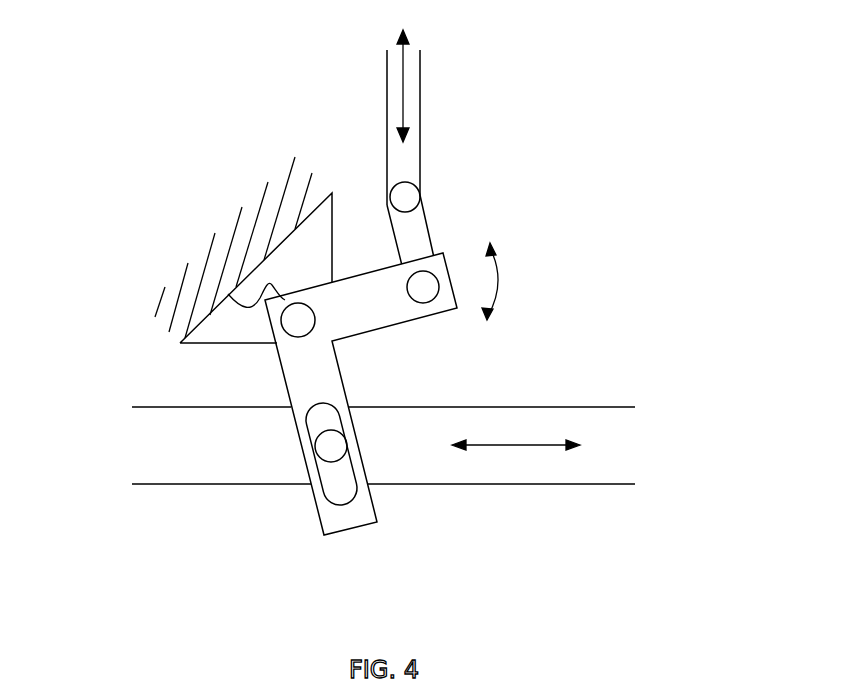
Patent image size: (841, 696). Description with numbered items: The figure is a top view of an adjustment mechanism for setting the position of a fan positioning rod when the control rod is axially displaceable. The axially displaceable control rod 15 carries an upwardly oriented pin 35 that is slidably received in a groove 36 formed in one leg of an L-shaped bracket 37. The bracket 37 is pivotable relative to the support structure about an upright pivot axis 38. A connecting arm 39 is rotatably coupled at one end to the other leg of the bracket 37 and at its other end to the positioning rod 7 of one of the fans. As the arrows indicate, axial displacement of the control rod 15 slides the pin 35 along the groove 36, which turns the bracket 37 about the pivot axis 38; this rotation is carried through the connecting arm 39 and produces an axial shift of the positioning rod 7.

The positioning rod 7 is at (408, 155).
The connecting arm 39 is at (413, 237).
The upright pivot axis 38 is at (298, 320).
The L-shaped bracket 37 is at (312, 363).
The control rod 15 is at (182, 458).
The pin 35 is at (330, 443).
The groove 36 is at (337, 487).